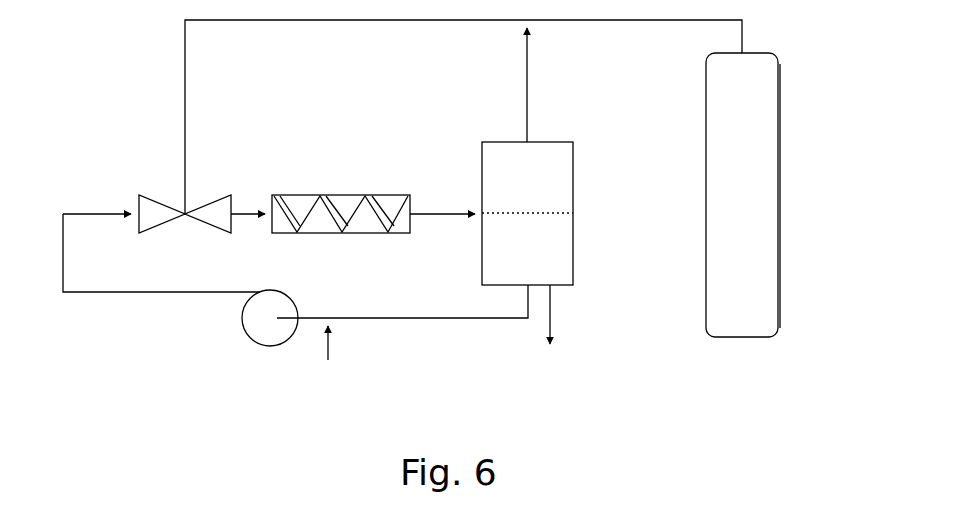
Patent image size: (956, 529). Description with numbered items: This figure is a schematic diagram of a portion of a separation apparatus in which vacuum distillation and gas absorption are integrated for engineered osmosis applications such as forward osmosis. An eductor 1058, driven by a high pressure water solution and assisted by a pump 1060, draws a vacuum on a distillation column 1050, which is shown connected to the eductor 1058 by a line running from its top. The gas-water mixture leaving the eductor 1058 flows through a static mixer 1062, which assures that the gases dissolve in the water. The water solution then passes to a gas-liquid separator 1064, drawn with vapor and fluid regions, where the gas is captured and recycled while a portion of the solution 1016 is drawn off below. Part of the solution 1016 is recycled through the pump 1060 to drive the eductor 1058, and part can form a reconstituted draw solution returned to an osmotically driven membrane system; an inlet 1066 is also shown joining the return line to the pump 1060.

The distillation column 1050 is at (758, 181).
The eductor 1058 is at (171, 199).
The pump 1060 is at (237, 318).
The static mixer 1062 is at (341, 199).
The gas-liquid separator 1064 is at (557, 213).
The fluid inlet 1066 is at (326, 358).
The solution 1016 is at (546, 334).